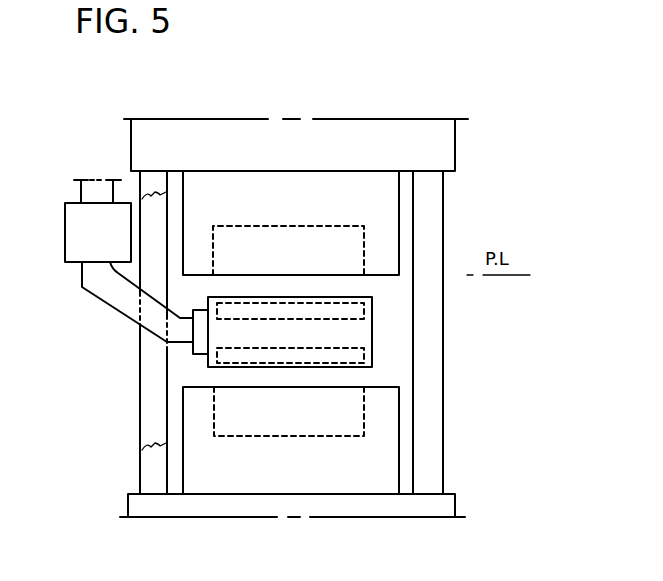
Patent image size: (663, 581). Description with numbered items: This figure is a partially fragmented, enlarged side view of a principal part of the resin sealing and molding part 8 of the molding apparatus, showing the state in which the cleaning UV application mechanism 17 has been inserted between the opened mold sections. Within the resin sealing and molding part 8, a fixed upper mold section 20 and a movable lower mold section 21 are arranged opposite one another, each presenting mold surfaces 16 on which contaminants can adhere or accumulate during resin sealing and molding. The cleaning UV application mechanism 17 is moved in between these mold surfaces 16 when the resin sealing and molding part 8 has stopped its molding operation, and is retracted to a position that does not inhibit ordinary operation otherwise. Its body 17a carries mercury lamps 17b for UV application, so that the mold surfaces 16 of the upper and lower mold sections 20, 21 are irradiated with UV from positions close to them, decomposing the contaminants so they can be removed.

The resin sealing and molding part 8 is at (553, 127).
The mold surfaces 16 is at (276, 276).
The cleaning UV application mechanism 17 is at (114, 328).
The body 17a is at (363, 333).
The lamps 17b is at (377, 308).
The fixed upper mold section 20 is at (383, 215).
The movable lower mold section 21 is at (382, 453).